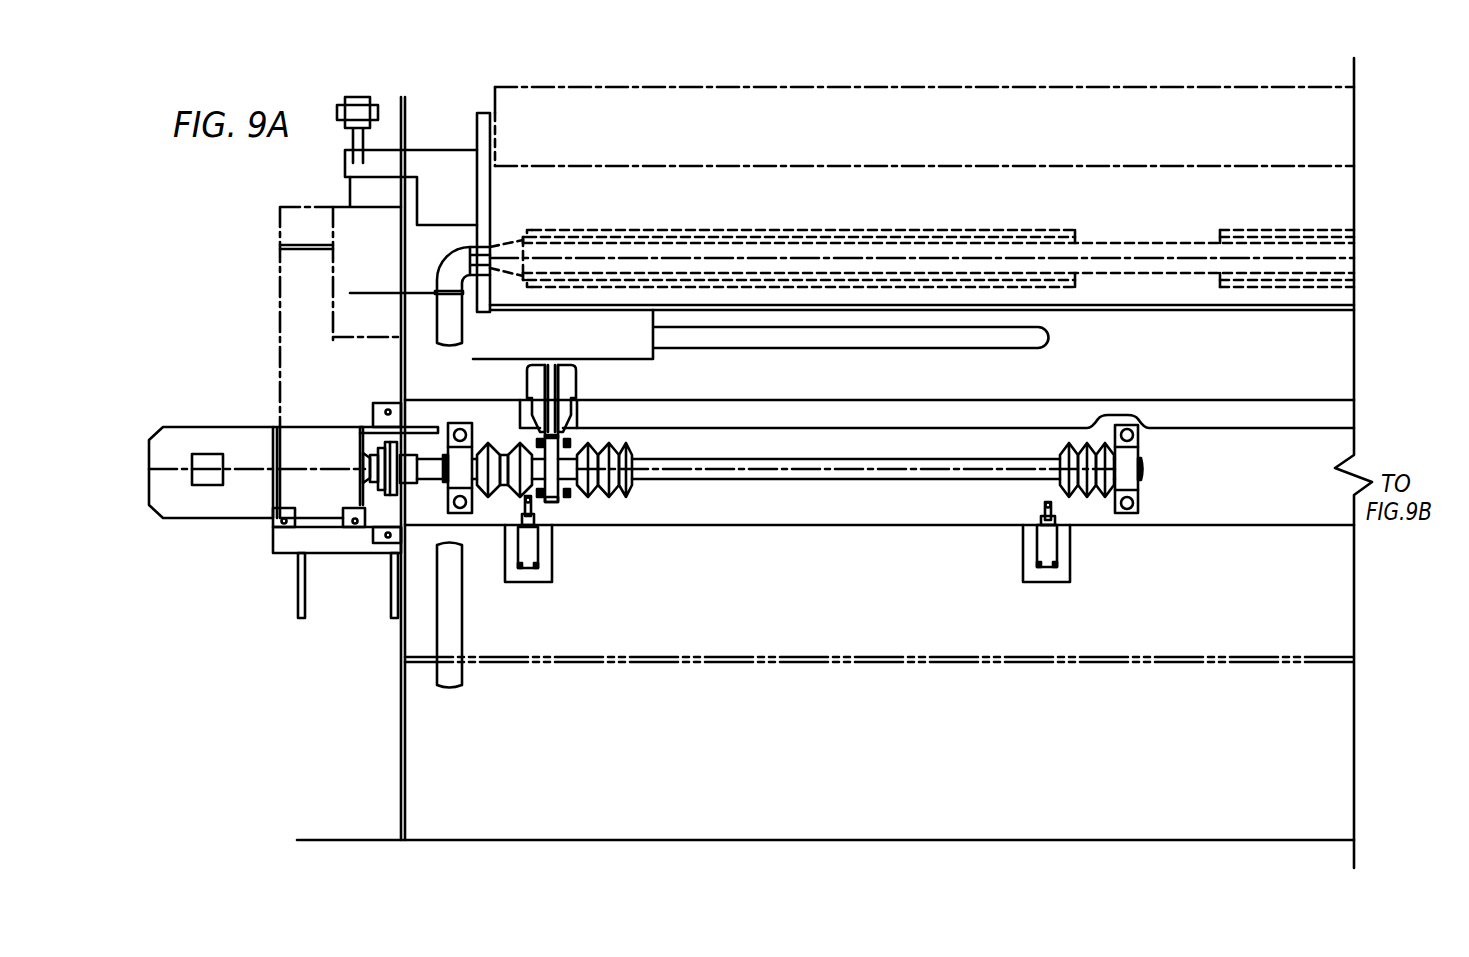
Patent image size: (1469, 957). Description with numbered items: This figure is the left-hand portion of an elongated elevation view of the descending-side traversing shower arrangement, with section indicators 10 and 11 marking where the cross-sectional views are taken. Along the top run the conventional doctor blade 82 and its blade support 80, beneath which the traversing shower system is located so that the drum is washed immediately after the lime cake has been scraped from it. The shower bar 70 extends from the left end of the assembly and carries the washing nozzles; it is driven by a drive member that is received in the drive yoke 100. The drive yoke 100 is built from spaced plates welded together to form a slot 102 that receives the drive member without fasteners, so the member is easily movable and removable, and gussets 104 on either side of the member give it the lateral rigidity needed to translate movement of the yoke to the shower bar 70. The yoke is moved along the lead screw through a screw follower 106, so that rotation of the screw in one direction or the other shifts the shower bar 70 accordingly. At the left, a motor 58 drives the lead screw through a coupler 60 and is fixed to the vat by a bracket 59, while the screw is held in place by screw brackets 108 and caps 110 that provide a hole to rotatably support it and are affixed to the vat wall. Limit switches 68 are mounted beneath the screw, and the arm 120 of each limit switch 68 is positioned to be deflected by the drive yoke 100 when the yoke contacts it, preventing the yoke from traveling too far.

The section line 10- 10 is at (467, 108).
The section line 11- 11 is at (834, 369).
The motor 58 is at (222, 505).
The bracket 59 is at (313, 540).
The coupler 60 is at (380, 450).
The limit switch 68 is at (533, 555).
The shower bar 70 is at (477, 250).
The blade support 80 is at (1176, 211).
The doctor blade 82 is at (680, 107).
The drive yoke 100 is at (562, 497).
The slot 102 is at (553, 420).
The gussets 104 is at (537, 387).
The screw follower 106 is at (570, 443).
The screw bracket 108 is at (1133, 488).
The cap 110 is at (455, 487).
The arm 120 is at (530, 508).